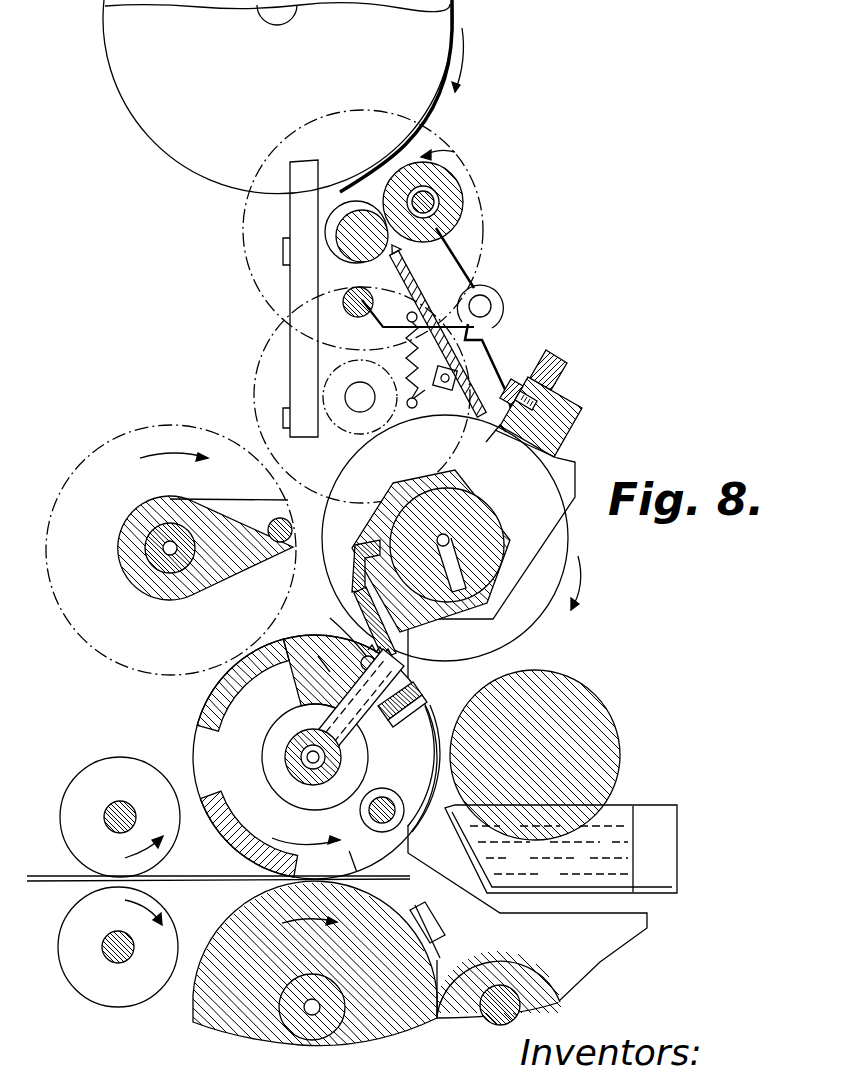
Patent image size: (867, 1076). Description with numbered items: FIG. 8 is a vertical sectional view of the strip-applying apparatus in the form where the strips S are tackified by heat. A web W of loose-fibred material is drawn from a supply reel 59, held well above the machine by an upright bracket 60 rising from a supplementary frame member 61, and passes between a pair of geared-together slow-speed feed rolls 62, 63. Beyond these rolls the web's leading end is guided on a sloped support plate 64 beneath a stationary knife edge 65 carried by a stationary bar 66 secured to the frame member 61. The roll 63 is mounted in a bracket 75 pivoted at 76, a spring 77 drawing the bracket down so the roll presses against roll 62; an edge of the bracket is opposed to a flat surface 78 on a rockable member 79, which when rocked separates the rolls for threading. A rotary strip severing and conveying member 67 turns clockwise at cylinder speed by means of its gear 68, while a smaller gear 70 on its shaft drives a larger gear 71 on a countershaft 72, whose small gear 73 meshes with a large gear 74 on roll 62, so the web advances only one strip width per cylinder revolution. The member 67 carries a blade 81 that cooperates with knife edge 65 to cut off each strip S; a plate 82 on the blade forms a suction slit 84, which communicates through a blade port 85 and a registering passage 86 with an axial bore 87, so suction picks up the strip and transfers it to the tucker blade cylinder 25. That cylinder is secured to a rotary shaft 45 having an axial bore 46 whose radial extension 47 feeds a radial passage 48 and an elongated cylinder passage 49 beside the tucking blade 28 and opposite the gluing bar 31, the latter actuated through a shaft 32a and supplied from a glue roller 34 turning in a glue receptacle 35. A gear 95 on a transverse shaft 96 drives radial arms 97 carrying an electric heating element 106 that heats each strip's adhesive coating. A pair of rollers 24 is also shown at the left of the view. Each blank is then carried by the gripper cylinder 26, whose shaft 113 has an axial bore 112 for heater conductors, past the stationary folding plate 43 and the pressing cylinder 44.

The supply reel 59 is at (445, 38).
The web W is at (424, 160).
The large gear 74 is at (243, 227).
The upright bracket 60 is at (292, 292).
The feed roll 62 is at (360, 214).
The feed roll 63 is at (450, 193).
The bracket 75 is at (452, 262).
The support plate 64 is at (462, 284).
The pivot 76 is at (492, 304).
The rockable member 79 is at (352, 296).
The flat surface 78 is at (378, 328).
The larger gear 71 is at (256, 393).
The small gear 73 is at (325, 392).
The countershaft 72 is at (356, 404).
The spring 77 is at (418, 402).
The stationary bar 66 is at (583, 412).
The supplementary frame member 61 is at (576, 470).
The knife edge 65 is at (500, 438).
The gear 68 is at (570, 540).
The rotary strip severing and conveying member 67 is at (492, 520).
The smaller gear 70 is at (472, 486).
The registering passage 86 is at (478, 592).
The axial bore 87 is at (438, 482).
The blade port 85 is at (356, 590).
The suction slit 84 is at (400, 640).
The blade 81 is at (396, 658).
The plate 82 is at (338, 624).
The radial passage 48 is at (324, 660).
The cylinder passage 49 is at (365, 658).
The tucker blade cylinder 25 is at (198, 736).
The rotary shaft 45 is at (330, 770).
The axial bore 46 is at (300, 748).
The radial extension 47 is at (310, 748).
The tucking blade 28 is at (426, 686).
The gluing bar 31 is at (420, 704).
The strip S is at (420, 768).
The shaft 32a is at (370, 816).
The feed rollers 24 is at (96, 766).
The glue roller 34 is at (590, 705).
The glue receptacle 35 is at (630, 812).
The folding plate 43 is at (440, 922).
The pressing cylinder 44 is at (540, 985).
The gripper cylinder 26 is at (223, 1028).
The shaft 113 is at (324, 1025).
The axial bore 112 is at (306, 1014).
The gear 95 is at (104, 444).
The radial arm 97 is at (226, 568).
The transverse shaft 96 is at (166, 572).
The electric heating element 106 is at (284, 532).